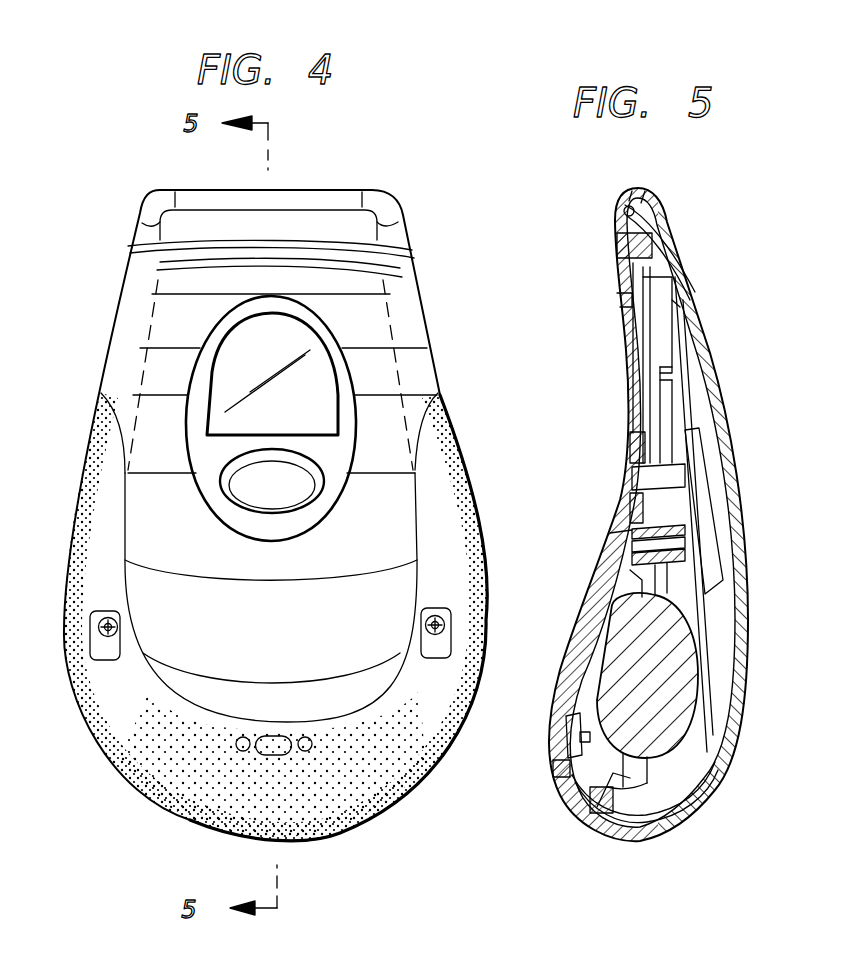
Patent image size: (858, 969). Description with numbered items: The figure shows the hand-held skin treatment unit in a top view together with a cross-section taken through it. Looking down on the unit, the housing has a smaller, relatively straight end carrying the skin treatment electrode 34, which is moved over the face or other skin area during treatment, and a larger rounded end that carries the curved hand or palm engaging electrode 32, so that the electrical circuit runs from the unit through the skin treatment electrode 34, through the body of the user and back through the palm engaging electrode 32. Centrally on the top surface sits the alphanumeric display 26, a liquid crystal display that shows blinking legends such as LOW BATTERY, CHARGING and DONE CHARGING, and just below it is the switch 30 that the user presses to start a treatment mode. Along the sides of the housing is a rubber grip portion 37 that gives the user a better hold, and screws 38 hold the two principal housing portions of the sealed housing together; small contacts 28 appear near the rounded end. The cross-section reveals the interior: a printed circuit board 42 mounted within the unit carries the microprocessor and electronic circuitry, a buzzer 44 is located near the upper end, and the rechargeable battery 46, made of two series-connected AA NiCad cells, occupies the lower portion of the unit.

In FIG. 4, the alphanumeric display 26 is at (280, 357).
In FIG. 4, the connector contacts 28 is at (233, 743).
In FIG. 4, the switch 30 is at (287, 495).
In FIG. 5, the hand or palm engaging electrode 32 is at (667, 838).
In FIG. 4, the skin treatment electrode 34 is at (313, 220).
In FIG. 4, the rubber grip portion 37 is at (100, 543).
In FIG. 5, the rubber grip portion 37 is at (560, 793).
In FIG. 4, the screws 38 is at (100, 620).
In FIG. 5, the printed circuit board 42 is at (700, 493).
In FIG. 5, the buzzer 44 is at (713, 357).
In FIG. 5, the rechargeable battery 46 is at (687, 673).